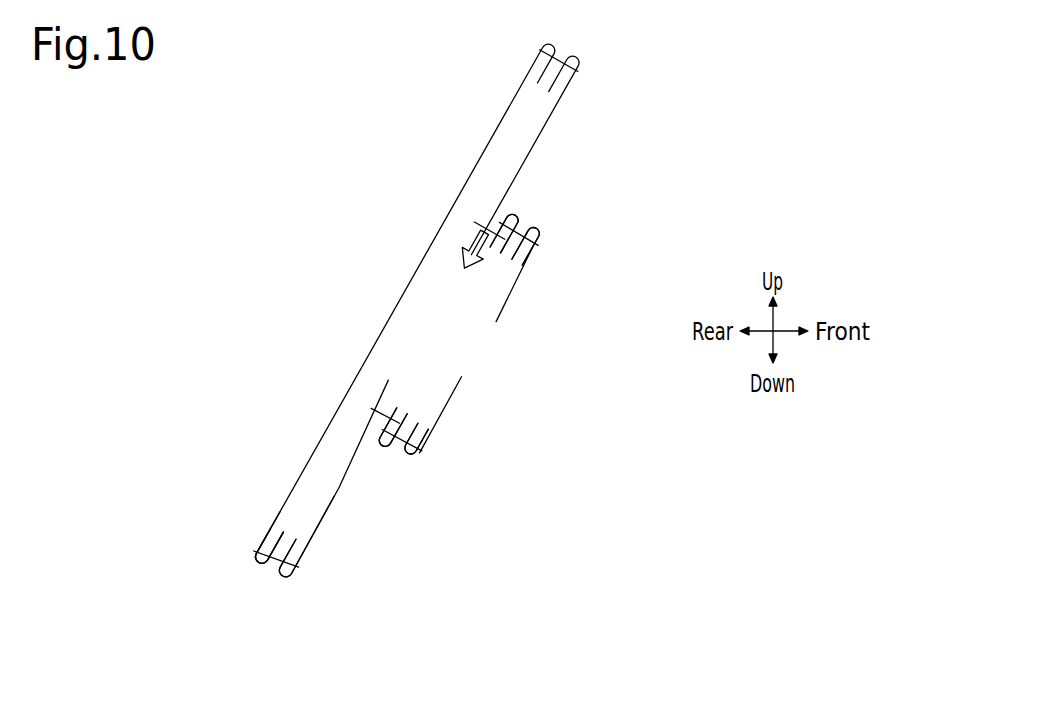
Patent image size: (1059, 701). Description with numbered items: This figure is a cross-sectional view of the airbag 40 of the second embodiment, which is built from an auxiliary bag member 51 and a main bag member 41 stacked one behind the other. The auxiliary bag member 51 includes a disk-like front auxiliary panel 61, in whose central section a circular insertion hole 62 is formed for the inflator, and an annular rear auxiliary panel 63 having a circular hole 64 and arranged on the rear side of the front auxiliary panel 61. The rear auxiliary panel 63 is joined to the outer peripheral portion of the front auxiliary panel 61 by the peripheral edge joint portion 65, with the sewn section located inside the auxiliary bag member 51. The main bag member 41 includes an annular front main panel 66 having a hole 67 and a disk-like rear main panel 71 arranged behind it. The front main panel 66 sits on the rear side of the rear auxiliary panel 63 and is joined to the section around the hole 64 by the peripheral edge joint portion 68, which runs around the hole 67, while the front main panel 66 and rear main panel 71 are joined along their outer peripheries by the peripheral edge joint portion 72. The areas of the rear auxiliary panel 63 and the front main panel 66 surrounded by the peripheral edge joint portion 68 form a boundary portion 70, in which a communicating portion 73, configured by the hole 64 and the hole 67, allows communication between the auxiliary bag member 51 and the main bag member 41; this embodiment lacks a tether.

The airbag 40 is at (363, 171).
The main bag member 41 is at (315, 621).
The auxiliary bag member 51 is at (608, 200).
The front auxiliary panel 61 is at (540, 229).
The insertion hole 62 is at (497, 321).
The rear auxiliary panel 63 is at (514, 216).
The hole 64 is at (407, 413).
The peripheral edge joint portion 65 is at (530, 250).
The front main panel 66 is at (292, 574).
The hole 67 is at (386, 412).
The peripheral edge joint portion 68 is at (475, 221).
The boundary portion 70 is at (473, 266).
The rear main panel 71 is at (255, 554).
The peripheral edge joint portion 72 is at (566, 53).
The communicating portion 73 is at (306, 332).